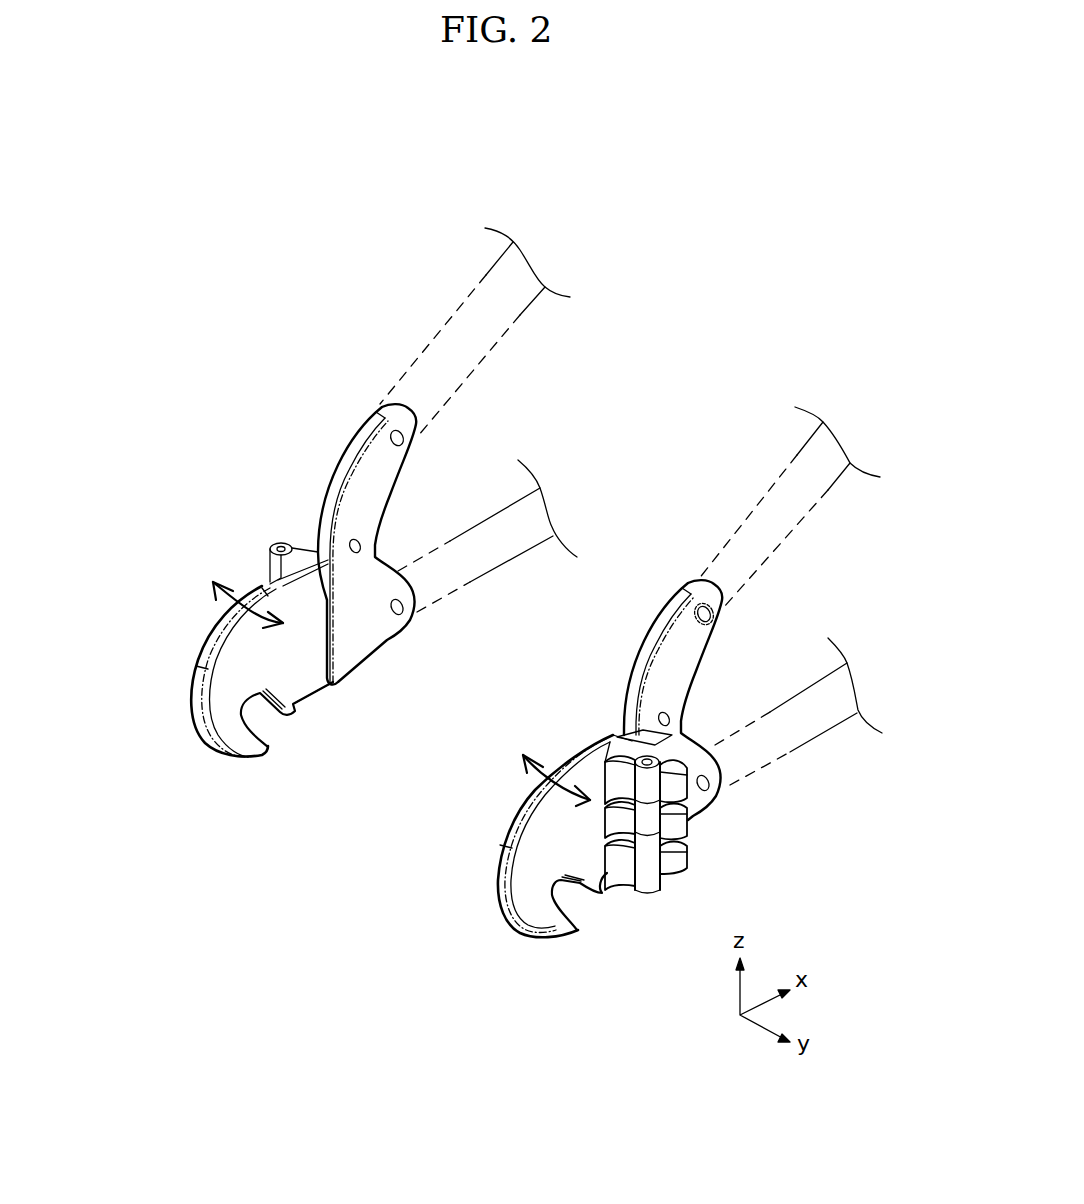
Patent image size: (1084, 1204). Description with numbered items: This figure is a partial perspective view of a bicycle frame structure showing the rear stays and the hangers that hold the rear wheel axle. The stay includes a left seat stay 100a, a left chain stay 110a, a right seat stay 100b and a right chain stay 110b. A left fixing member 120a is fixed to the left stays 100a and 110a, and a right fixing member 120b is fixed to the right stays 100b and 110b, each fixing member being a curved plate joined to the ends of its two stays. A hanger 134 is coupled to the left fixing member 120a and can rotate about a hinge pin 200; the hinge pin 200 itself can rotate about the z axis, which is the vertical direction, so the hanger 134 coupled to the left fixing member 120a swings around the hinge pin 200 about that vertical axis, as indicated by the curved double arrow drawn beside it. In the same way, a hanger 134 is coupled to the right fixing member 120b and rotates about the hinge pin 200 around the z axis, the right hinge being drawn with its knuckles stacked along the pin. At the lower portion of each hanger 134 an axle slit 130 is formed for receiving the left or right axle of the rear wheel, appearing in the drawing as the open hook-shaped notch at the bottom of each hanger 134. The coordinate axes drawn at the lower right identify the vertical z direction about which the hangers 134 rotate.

The left seat stay 100a is at (435, 336).
The right seat stay 100b is at (757, 490).
The left chain stay 110a is at (476, 580).
The right chain stay 110b is at (783, 757).
The left fixing member 120a is at (347, 454).
The right fixing member 120b is at (662, 632).
The hook notch of clamp arm 130 is at (267, 726).
The hanger 134 is at (227, 691).
The hinge pin 200 is at (280, 546).